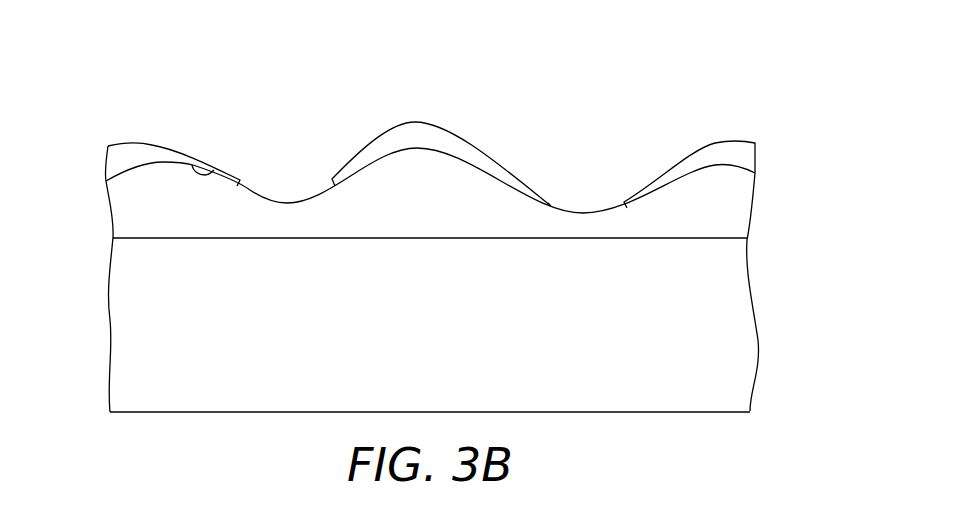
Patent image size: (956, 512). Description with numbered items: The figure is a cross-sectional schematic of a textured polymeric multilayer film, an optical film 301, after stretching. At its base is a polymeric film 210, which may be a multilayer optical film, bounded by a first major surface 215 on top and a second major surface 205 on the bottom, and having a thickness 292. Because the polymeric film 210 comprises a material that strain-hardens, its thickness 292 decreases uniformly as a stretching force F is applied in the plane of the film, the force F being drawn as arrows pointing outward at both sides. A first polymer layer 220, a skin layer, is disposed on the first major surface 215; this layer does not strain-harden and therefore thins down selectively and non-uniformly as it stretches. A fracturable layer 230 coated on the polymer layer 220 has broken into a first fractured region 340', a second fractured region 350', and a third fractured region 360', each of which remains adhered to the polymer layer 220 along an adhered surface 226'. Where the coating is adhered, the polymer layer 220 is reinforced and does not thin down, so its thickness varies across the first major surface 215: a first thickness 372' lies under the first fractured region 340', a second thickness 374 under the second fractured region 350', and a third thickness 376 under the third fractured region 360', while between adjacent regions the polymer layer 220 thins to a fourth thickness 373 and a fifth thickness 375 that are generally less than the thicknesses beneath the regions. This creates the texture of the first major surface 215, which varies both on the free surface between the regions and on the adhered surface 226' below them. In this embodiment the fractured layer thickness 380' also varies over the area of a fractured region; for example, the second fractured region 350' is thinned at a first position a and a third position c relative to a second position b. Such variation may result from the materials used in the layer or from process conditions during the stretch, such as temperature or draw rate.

The optical film 301 is at (151, 76).
The first fractured region 340' is at (174, 144).
The adhered surface 226' is at (226, 138).
The second fractured region 350' is at (441, 145).
The third fractured region 360' is at (689, 148).
The fracturable layer 230 is at (759, 155).
The fractured layer thickness 380' is at (87, 184).
The first thickness 372' is at (194, 222).
The fourth thickness 373 is at (287, 203).
The second thickness 374 is at (418, 149).
The fifth thickness 375 is at (587, 188).
The third thickness 376 is at (723, 168).
The first major surface 215 is at (510, 240).
The first polymer layer 220 is at (740, 206).
The polymeric film 210 is at (740, 262).
The thickness 292 is at (248, 238).
The second major surface 205 is at (630, 410).
The first position a is at (343, 157).
The second position b is at (427, 120).
The third position c is at (535, 185).
The stretching force F is at (37, 313).